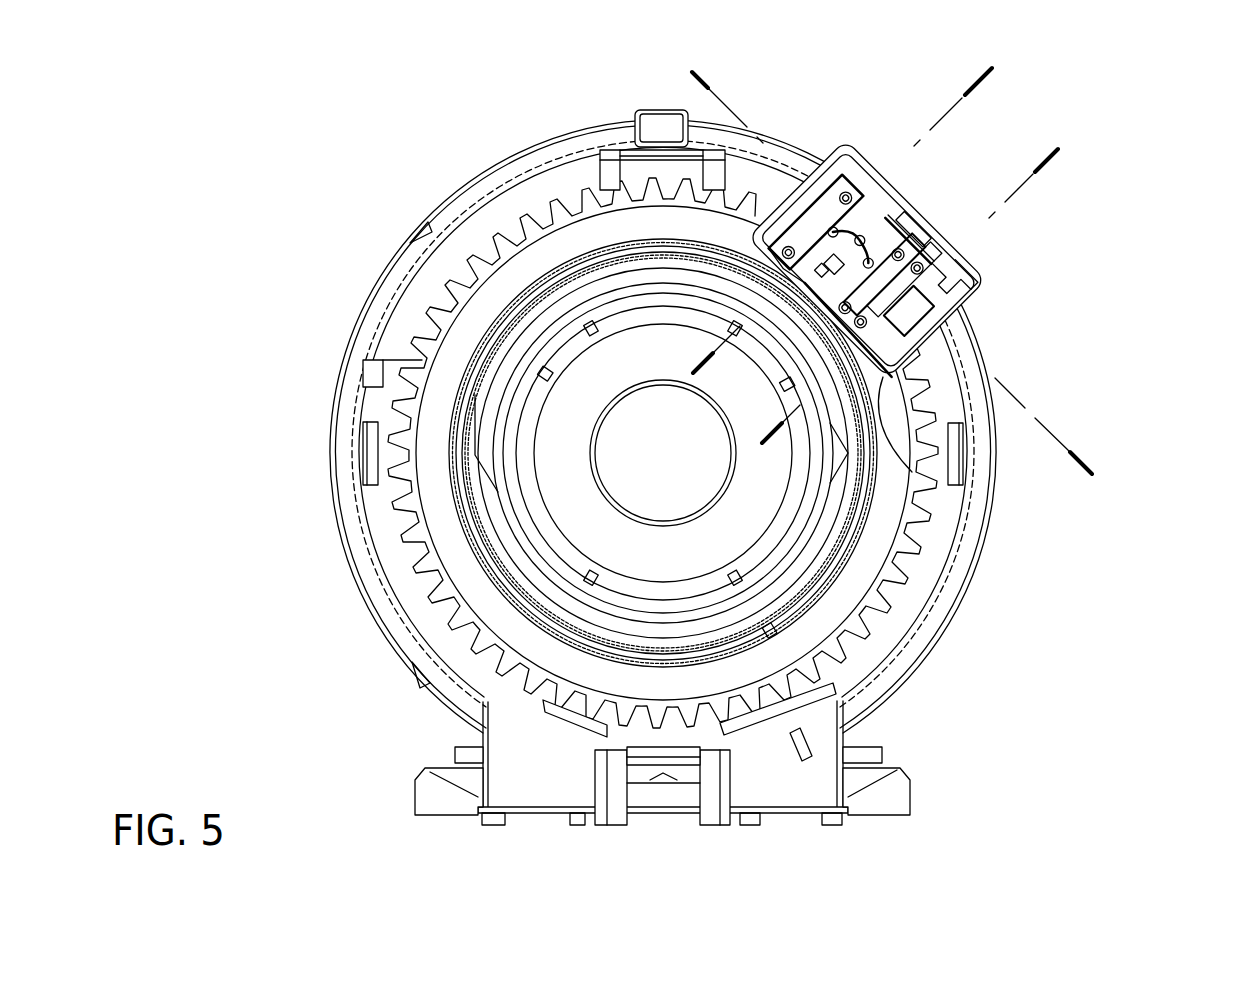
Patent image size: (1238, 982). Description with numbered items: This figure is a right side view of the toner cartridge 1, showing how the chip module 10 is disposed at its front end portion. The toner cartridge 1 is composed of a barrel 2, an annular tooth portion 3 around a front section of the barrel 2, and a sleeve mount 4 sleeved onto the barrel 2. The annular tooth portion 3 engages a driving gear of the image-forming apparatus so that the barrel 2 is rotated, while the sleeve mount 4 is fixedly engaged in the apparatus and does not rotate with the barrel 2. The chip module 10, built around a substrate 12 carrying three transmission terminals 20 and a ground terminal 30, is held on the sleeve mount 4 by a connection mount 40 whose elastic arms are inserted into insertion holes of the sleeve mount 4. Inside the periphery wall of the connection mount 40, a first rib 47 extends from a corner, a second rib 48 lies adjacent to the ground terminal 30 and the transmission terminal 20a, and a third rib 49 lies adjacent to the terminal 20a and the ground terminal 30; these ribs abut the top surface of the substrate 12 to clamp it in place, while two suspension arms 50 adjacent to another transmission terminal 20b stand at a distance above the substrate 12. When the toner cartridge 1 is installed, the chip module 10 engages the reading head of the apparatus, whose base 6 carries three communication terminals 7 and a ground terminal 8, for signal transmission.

The toner cartridge 1 is at (282, 179).
The barrel 2 is at (335, 508).
The annular tooth portion 3 is at (372, 436).
The sleeve mount 4 is at (836, 150).
The base 6 is at (718, 65).
The communication terminals 7 is at (948, 58).
The ground terminal 8 is at (1018, 128).
The chip module 10 is at (971, 327).
The substrate 12 is at (908, 226).
The transmission terminals 20 is at (925, 248).
The transmission terminal 20a is at (806, 150).
The transmission terminal 20b is at (983, 232).
The ground terminal 30 is at (874, 175).
The connection mount 40 is at (966, 290).
The first rib 47 is at (988, 268).
The second rib 48 is at (905, 198).
The third rib 49 is at (793, 283).
The suspension arms 50 is at (912, 472).